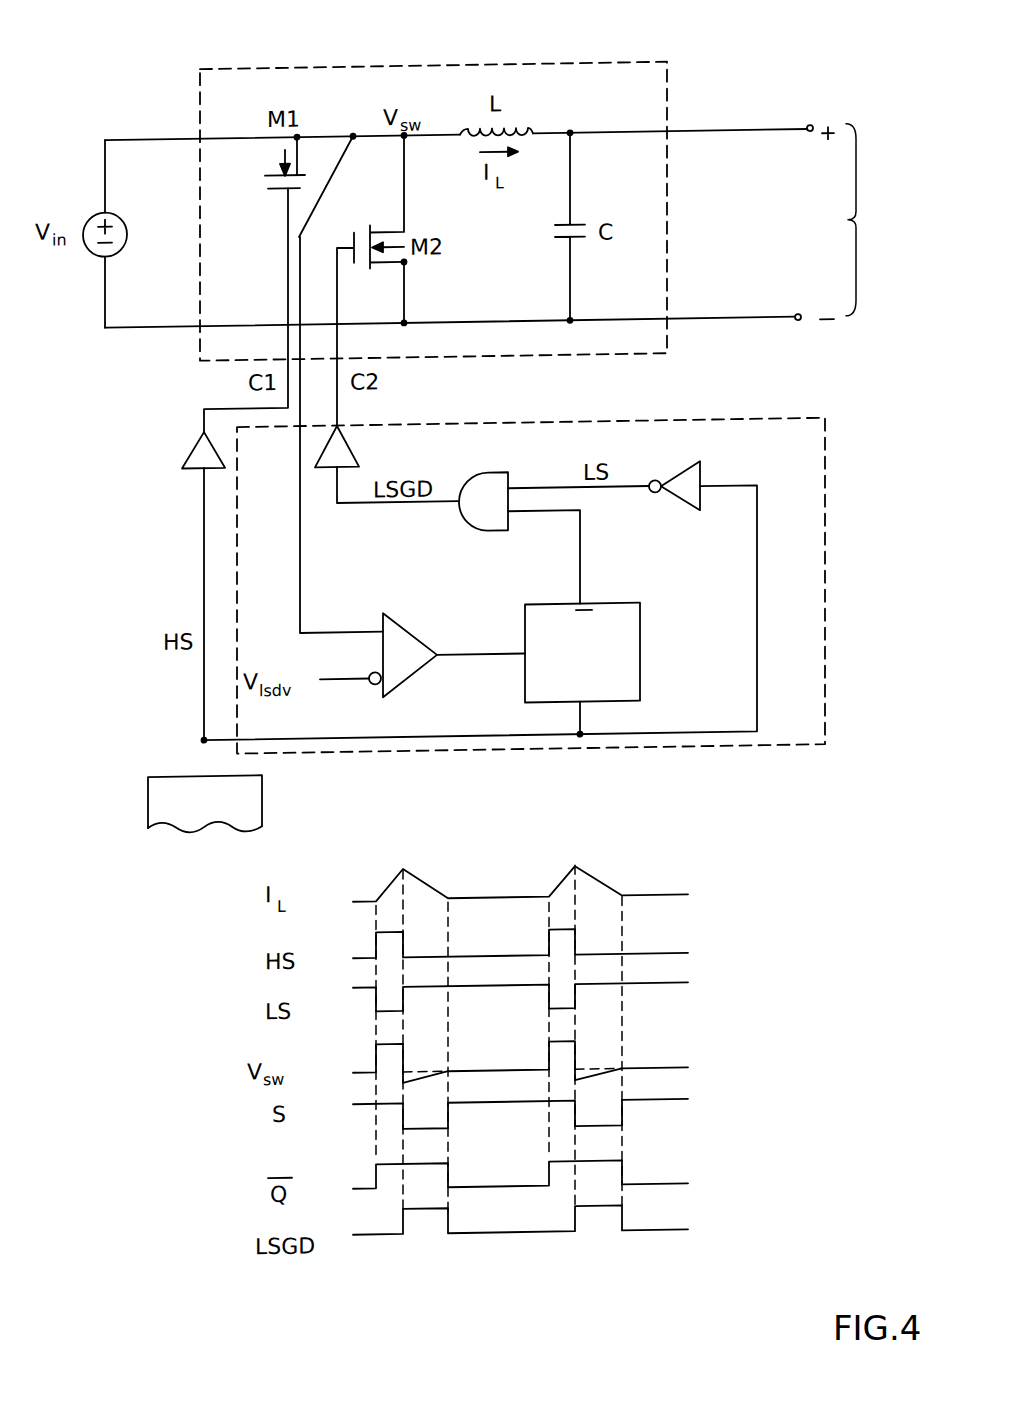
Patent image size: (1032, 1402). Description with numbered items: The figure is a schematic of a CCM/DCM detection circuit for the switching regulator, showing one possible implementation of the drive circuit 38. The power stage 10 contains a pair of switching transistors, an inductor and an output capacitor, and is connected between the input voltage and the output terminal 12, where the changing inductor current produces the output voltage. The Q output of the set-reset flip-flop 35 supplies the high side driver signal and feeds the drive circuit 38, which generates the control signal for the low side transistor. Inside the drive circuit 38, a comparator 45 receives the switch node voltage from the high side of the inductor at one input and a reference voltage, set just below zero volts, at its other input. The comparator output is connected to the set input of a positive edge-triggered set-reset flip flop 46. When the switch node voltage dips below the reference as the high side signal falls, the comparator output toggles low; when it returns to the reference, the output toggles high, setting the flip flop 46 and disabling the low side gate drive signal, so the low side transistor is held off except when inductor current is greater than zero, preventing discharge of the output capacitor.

The power stage 10 is at (265, 66).
The output terminal 12 is at (810, 131).
The set-reset flip-flop 35 is at (176, 772).
The drive circuit 38 is at (826, 604).
The comparator 45 is at (414, 632).
The positive edge-triggered set-reset flip flop 46 is at (641, 651).